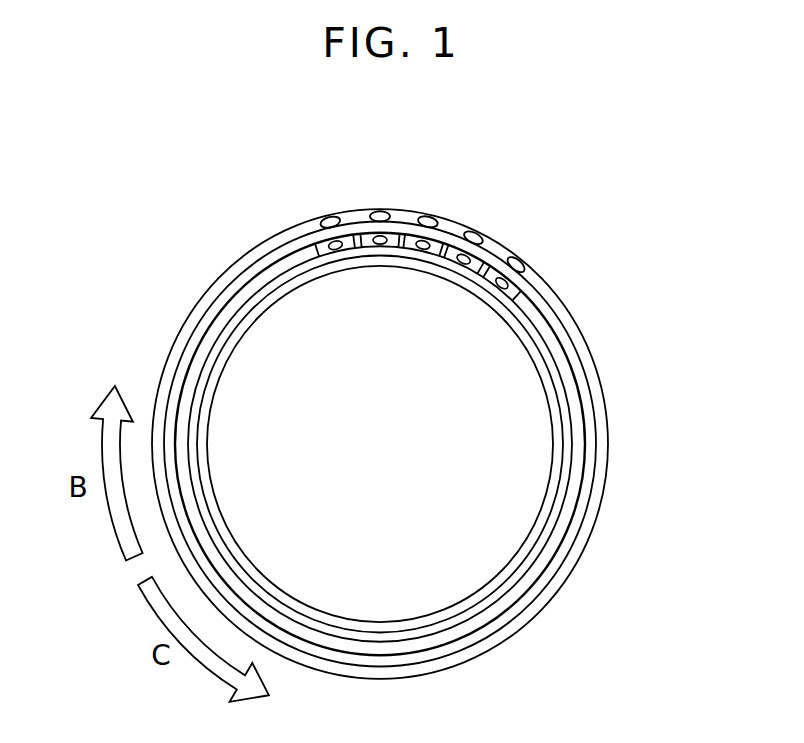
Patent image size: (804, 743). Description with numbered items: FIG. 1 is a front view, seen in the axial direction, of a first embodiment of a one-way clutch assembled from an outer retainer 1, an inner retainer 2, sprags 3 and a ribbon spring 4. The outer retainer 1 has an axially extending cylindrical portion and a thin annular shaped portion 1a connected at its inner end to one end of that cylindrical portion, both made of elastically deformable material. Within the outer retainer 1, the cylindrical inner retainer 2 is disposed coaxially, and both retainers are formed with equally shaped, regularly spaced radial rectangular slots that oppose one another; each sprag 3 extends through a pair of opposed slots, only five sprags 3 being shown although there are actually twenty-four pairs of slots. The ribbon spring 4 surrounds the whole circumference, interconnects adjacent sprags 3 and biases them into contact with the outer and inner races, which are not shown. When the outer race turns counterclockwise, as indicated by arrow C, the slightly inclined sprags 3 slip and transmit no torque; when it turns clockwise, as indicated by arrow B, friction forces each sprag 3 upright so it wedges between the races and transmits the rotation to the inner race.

The outer retainer 1 is at (268, 257).
The thin annular shaped portion 1a is at (590, 360).
The inner retainer 2 is at (272, 293).
The sprag 3 is at (378, 212).
The ribbon spring 4 is at (483, 267).